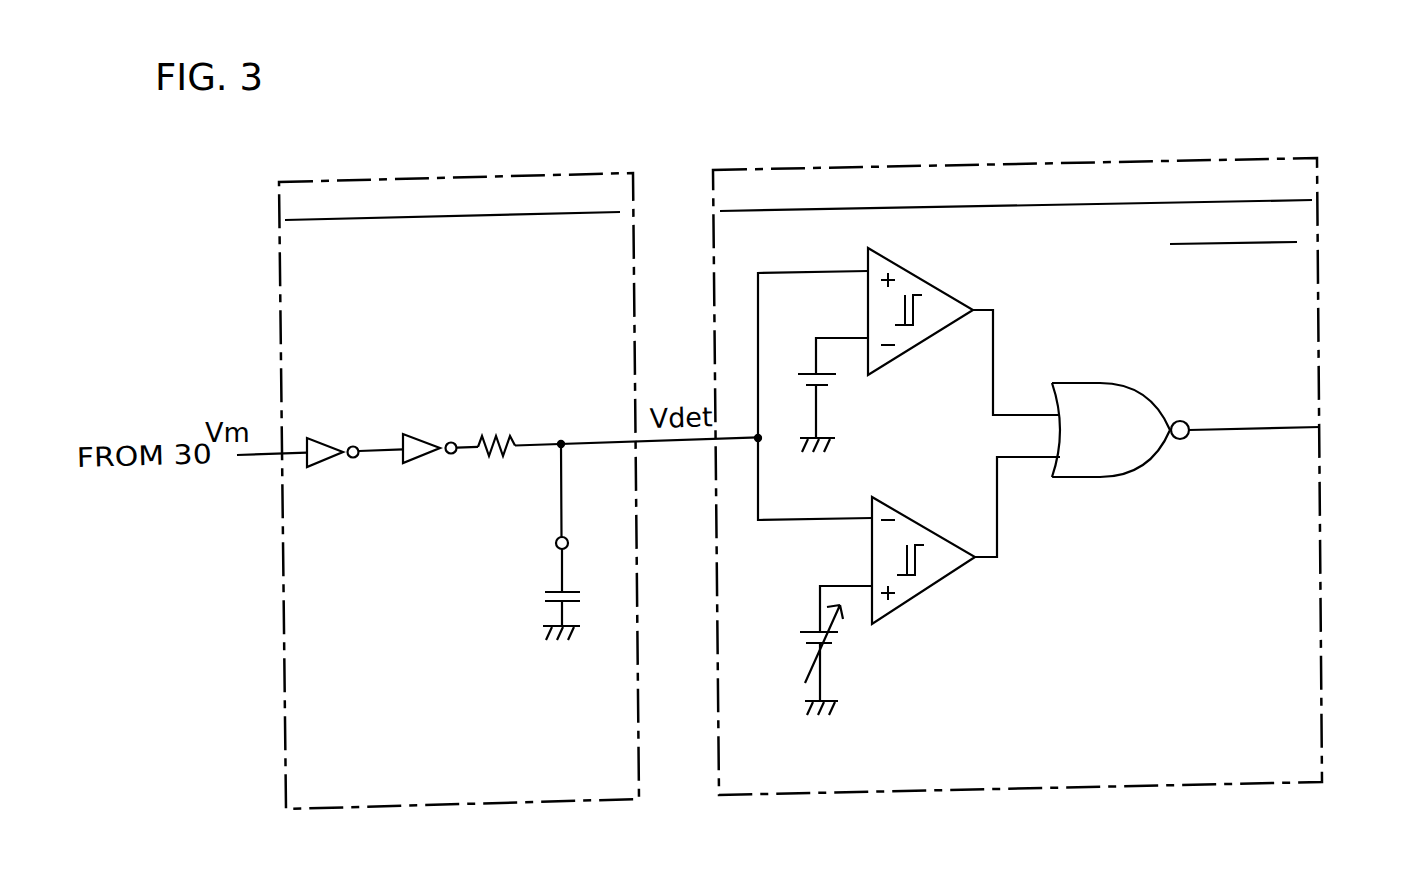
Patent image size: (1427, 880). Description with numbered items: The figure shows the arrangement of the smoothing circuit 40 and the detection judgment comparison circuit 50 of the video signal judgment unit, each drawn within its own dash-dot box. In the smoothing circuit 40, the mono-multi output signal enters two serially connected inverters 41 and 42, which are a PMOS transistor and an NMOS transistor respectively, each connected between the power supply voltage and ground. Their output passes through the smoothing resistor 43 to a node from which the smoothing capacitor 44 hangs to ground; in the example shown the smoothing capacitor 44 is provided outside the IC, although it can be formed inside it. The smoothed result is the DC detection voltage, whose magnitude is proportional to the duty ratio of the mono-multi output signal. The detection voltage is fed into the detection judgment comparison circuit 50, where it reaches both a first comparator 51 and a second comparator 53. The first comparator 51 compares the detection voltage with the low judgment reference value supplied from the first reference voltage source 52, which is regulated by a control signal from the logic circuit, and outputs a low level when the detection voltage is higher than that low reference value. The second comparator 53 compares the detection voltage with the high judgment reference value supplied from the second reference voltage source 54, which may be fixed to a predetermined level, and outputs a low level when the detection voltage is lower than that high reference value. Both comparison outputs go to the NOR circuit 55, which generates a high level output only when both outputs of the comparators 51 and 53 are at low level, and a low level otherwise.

The smoothing circuit 40 is at (595, 163).
The inverter 41 is at (316, 437).
The inverter 42 is at (436, 427).
The smoothing resistor 43 is at (498, 421).
The smoothing capacitor 44 is at (543, 603).
The detection judgment comparison circuit 50 is at (1220, 150).
The first comparator 51 is at (910, 505).
The first reference voltage source 52 is at (840, 643).
The second comparator 53 is at (915, 258).
The second reference voltage source 54 is at (838, 385).
The NOR circuit 55 is at (1120, 371).